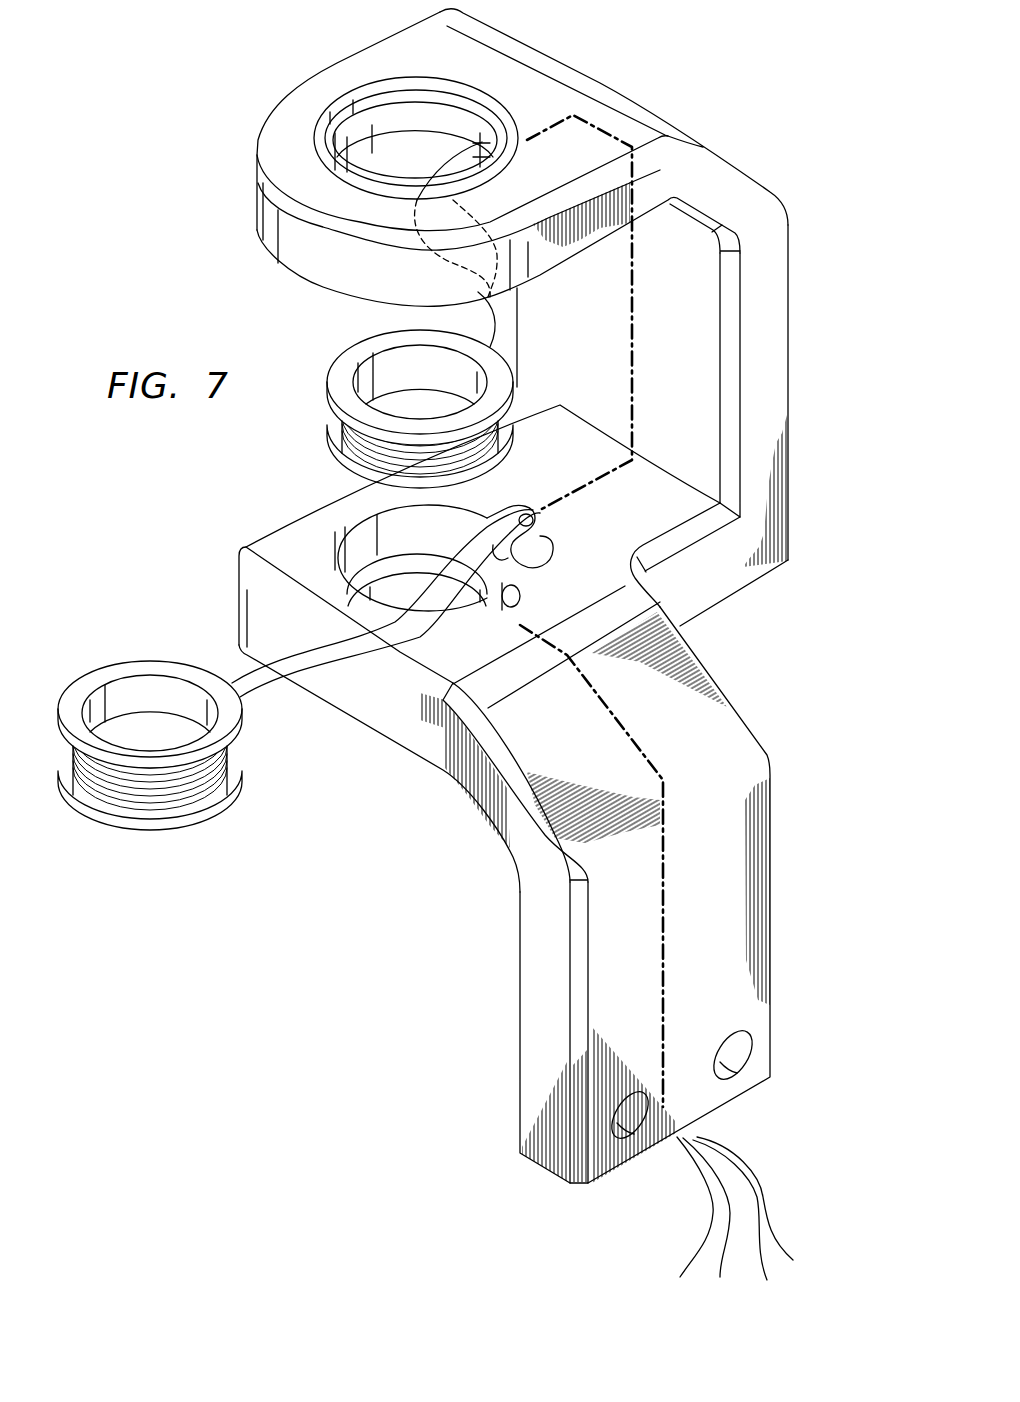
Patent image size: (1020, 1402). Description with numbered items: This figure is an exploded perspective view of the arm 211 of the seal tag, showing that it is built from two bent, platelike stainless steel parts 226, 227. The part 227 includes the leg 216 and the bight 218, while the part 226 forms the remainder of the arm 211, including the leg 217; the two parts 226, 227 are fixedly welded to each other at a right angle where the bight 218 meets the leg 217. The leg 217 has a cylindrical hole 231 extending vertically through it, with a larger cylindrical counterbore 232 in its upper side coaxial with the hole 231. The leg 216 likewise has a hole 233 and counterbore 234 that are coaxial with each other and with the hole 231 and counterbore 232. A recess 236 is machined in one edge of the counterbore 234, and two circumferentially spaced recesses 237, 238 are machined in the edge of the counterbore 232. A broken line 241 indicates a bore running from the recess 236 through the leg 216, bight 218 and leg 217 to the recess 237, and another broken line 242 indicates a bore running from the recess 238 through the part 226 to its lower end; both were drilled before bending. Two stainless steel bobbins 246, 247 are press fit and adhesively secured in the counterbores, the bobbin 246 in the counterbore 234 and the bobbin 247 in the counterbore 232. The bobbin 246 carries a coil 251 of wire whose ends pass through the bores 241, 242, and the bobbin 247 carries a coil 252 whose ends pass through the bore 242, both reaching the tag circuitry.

The arm 211 is at (518, 1021).
The leg 216 is at (258, 152).
The leg 217 is at (240, 563).
The bight 218 is at (787, 323).
The platelike part 226 is at (768, 987).
The platelike part 227 is at (370, 56).
The cylindrical hole 231 is at (467, 596).
The cylindrical counterbore 232 is at (360, 530).
The hole 233 is at (418, 100).
The counterbore 234 is at (414, 138).
The recess 236 is at (480, 140).
The recess 237 is at (536, 523).
The recess 238 is at (520, 588).
The bore 241 is at (632, 325).
The bore 242 is at (667, 943).
The bobbin 246 is at (347, 357).
The bobbin 247 is at (90, 680).
The coil 251 is at (363, 453).
The coil 252 is at (120, 792).